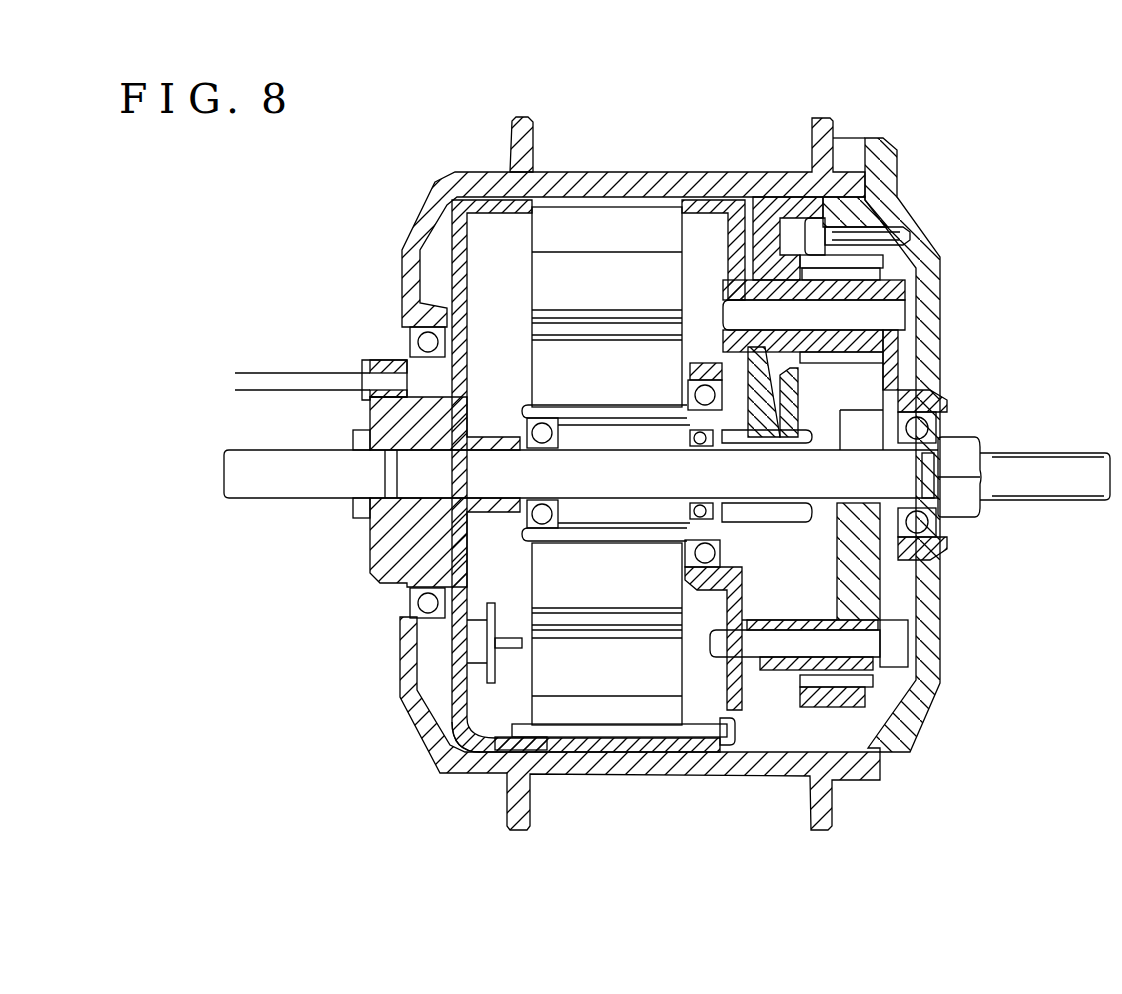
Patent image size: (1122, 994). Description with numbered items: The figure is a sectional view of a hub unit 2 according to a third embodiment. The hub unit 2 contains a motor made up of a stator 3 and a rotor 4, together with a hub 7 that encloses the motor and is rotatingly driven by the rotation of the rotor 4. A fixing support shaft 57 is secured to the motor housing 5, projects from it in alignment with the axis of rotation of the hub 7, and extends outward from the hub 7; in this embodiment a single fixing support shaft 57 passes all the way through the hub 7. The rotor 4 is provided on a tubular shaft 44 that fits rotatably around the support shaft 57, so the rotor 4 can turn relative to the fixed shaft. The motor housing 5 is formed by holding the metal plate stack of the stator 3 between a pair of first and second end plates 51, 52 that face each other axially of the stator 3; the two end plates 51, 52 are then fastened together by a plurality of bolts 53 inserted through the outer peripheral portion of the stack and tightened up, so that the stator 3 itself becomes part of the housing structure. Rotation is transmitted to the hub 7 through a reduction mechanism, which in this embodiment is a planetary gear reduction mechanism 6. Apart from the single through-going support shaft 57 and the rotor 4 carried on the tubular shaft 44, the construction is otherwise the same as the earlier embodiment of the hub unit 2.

The hub unit 2 is at (878, 118).
The stator 3 is at (522, 265).
The rotor 4 is at (515, 375).
The motor housing 5 is at (624, 812).
The planetary gear reduction mechanism 6 is at (854, 378).
The hub 7 is at (744, 170).
The tubular shaft 44 is at (472, 750).
The first end plate 51 is at (482, 758).
The second end plate 52 is at (729, 781).
The bolts 53 is at (647, 737).
The fixing support shaft 57 is at (372, 568).